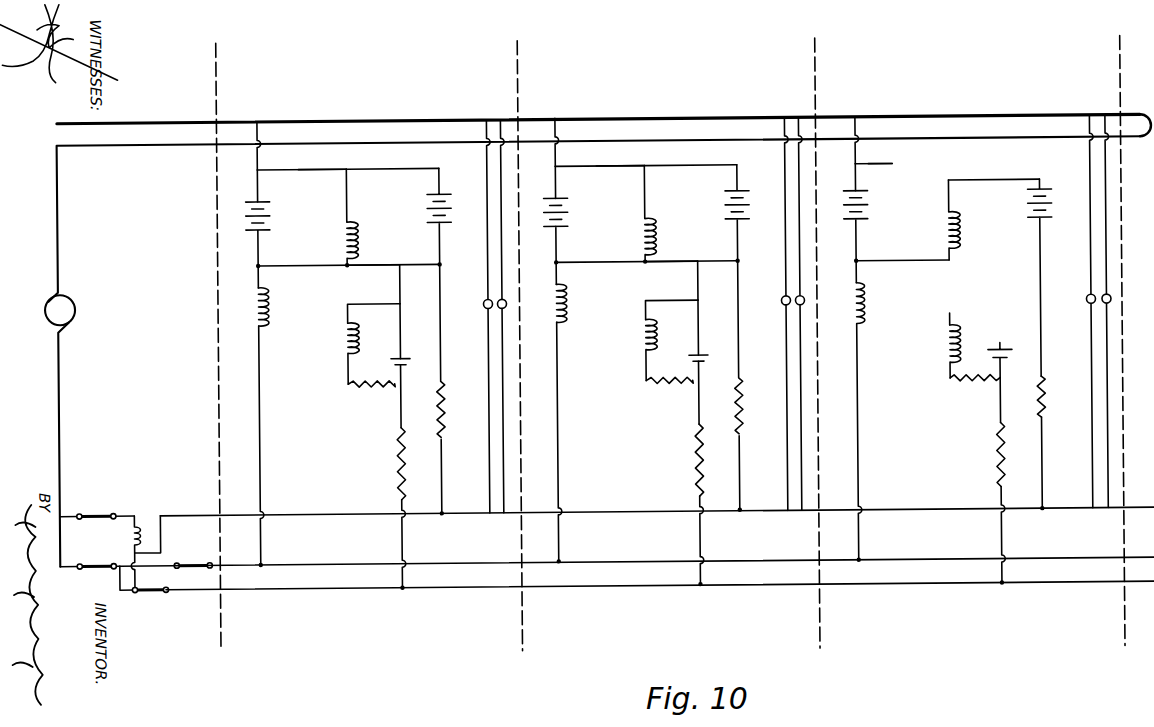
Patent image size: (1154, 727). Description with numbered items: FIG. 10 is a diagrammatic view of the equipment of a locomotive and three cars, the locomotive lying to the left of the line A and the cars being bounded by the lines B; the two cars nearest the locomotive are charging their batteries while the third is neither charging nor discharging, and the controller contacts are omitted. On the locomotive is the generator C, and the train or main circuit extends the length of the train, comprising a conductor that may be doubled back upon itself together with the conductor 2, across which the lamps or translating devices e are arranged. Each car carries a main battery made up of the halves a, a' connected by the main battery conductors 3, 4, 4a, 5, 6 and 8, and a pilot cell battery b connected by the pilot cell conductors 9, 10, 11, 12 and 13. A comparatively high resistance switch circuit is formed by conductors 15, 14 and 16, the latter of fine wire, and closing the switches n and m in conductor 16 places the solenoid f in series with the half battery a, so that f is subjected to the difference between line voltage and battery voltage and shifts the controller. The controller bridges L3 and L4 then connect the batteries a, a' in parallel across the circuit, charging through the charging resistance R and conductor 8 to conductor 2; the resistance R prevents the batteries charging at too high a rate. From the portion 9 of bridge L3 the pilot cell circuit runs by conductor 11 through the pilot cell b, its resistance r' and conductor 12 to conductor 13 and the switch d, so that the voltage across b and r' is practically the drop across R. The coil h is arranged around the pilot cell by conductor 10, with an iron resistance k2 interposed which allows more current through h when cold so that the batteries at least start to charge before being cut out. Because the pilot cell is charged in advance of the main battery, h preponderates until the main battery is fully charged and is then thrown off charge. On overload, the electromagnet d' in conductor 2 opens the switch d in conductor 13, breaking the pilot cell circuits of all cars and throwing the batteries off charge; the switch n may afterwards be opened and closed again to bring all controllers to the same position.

The conductor 2 is at (657, 502).
The main battery conductor 3 is at (550, 143).
The main battery conductor 4 is at (574, 156).
The main battery conductor 4a is at (692, 161).
The main battery conductor 5 is at (548, 183).
The main battery conductor 6 is at (602, 271).
The main battery conductor 8 is at (748, 466).
The pilot cell conductor 9 is at (659, 233).
The pilot cell conductor 10 is at (648, 314).
The pilot cell conductor 11 is at (559, 329).
The pilot cell conductor 12 is at (714, 536).
The pilot cell conductor 13 is at (660, 593).
The switch circuit conductor 14 is at (549, 442).
The switch circuit conductor 15 is at (258, 282).
The switch circuit conductor 16 is at (637, 554).
The main battery a is at (548, 229).
The main battery a' is at (747, 272).
The pilot cell battery b is at (410, 361).
The generator C is at (54, 307).
The overload circuit breaker switch d is at (144, 588).
The electromagnet d' is at (146, 549).
The translating device e is at (788, 304).
The electromagnet solenoid f is at (553, 310).
The pilot cell coil h is at (661, 350).
The resistance k2 is at (674, 390).
The controller bridge L3 is at (522, 271).
The controller bridge L4 is at (595, 153).
The switch m is at (97, 532).
The switch n is at (193, 556).
The charging resistance R is at (752, 347).
The resistance r' is at (694, 460).
The line A is at (215, 353).
The line B is at (817, 342).